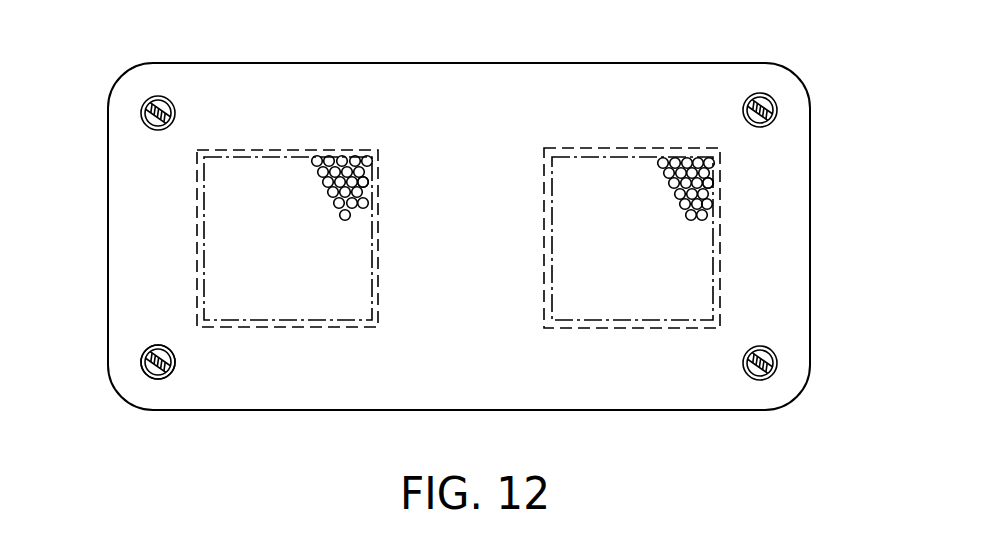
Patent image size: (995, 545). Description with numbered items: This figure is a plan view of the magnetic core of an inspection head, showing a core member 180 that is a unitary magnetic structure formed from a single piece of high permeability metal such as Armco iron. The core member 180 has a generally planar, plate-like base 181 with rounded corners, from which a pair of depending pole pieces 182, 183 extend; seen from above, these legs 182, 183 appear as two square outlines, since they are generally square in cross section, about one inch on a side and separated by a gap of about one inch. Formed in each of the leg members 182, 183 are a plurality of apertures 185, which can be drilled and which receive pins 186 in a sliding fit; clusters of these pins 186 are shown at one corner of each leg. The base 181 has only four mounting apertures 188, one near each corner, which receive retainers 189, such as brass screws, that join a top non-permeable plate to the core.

The core member 180 is at (558, 62).
The base 181 is at (810, 255).
The depending pole piece 182 is at (265, 148).
The depending pole piece 183 is at (632, 148).
The apertures 185 is at (370, 180).
The pins 186 is at (341, 151).
The mounting apertures 188 is at (177, 382).
The retainers 189 is at (773, 100).